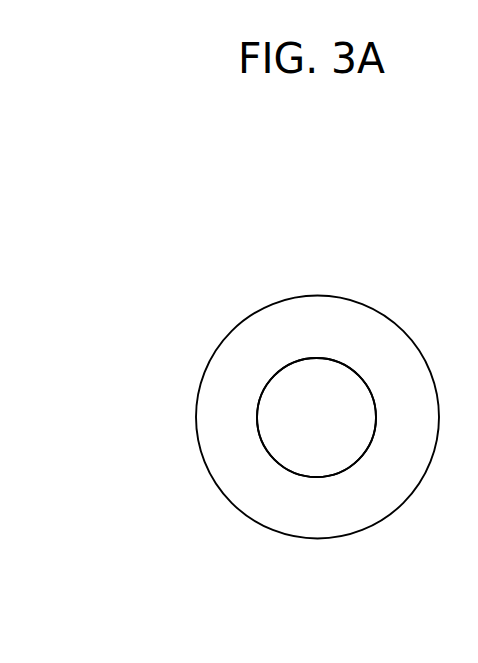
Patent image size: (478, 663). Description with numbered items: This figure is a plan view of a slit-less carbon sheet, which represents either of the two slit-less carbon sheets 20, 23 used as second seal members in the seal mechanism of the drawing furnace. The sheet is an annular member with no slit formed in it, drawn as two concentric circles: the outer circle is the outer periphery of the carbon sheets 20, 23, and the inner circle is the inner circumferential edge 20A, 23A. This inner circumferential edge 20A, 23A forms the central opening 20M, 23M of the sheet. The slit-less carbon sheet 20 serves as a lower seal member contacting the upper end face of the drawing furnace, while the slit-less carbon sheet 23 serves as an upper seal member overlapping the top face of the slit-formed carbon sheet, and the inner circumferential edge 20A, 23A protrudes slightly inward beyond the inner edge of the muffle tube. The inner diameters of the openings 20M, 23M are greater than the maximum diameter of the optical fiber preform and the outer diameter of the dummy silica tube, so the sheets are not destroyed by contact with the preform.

The slit-less carbon sheet 20 is at (274, 423).
The slit-less carbon sheet 23 is at (274, 423).
The opening 20M is at (243, 376).
The opening 23M is at (287, 390).
The inner circumferential edge 20A is at (329, 355).
The inner circumferential edge 23A is at (337, 360).